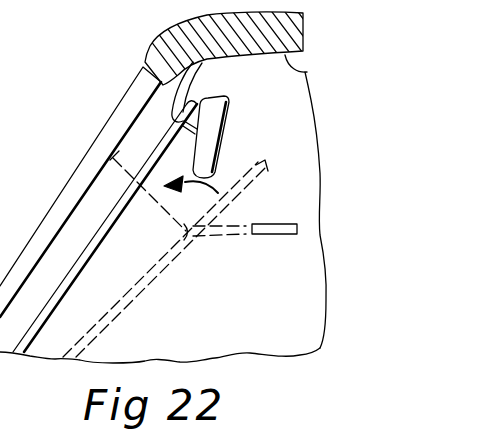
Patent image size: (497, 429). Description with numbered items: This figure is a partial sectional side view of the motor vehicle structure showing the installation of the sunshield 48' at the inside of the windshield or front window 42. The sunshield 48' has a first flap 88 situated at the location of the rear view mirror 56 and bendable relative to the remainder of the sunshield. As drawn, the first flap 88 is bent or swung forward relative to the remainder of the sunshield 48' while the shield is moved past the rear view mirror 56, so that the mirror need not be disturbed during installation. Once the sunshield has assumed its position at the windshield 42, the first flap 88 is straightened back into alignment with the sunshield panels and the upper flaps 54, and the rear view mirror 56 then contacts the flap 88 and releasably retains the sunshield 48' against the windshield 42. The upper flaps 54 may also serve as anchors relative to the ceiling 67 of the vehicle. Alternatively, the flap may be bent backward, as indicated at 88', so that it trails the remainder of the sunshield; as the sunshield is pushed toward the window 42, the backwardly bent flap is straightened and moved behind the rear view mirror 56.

The windshield 42 is at (129, 91).
The ceiling 67 is at (307, 72).
The rear view mirror 56 is at (228, 115).
The upper flaps 54 is at (219, 204).
The first flap 88 is at (94, 191).
The backwardly bent flap 88' is at (246, 251).
The sunshield 48' is at (131, 226).